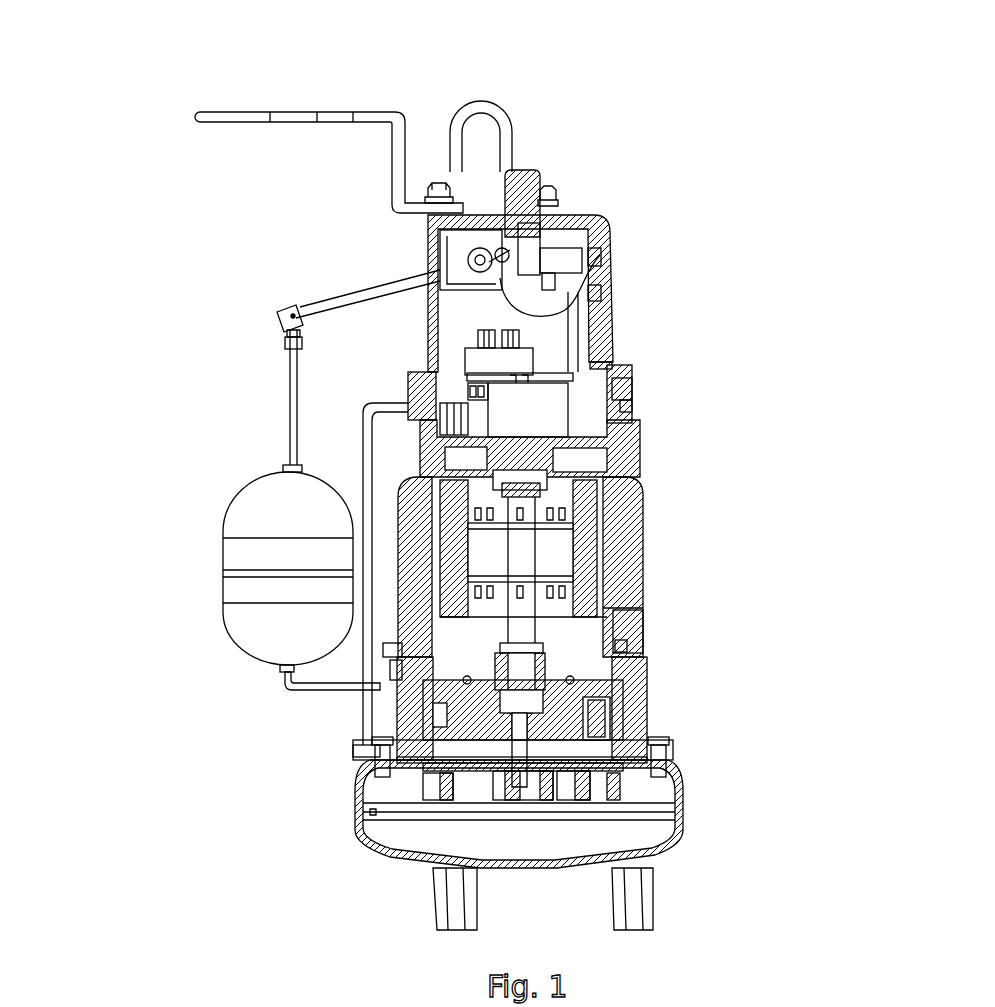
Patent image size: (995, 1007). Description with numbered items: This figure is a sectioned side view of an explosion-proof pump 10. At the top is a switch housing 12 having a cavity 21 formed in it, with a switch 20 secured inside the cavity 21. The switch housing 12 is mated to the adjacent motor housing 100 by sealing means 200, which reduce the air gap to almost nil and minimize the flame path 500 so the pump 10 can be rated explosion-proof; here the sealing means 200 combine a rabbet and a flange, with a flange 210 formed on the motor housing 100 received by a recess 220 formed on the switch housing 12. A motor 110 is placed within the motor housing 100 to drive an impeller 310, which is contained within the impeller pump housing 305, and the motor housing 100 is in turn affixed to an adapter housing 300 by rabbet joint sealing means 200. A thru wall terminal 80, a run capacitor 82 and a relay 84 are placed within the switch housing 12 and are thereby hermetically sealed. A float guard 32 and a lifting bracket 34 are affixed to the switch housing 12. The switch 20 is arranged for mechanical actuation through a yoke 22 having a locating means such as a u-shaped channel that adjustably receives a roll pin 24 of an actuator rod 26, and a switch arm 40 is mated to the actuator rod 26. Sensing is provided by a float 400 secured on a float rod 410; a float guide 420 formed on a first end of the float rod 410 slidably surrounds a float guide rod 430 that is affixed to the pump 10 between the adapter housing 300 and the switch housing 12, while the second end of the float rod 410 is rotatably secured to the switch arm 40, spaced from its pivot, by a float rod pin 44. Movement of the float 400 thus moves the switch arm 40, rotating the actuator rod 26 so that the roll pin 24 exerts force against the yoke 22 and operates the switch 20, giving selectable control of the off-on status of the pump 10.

The pump 10 is at (276, 204).
The switch housing 12 is at (590, 217).
The switch 20 is at (553, 293).
The cavity 21 is at (600, 257).
The yoke 22 is at (600, 293).
The roll pin 24 is at (432, 192).
The actuator rod 26 is at (470, 262).
The float guard 32 is at (293, 112).
The lifting bracket 34 is at (507, 105).
The switch arm 40 is at (340, 278).
The float rod pin 44 is at (297, 317).
The thru wall terminal 80 is at (637, 457).
The run capacitor 82 is at (465, 352).
The relay 84 is at (603, 373).
The motor housing 100 is at (642, 540).
The motor 110 is at (632, 500).
The sealing means 200 is at (613, 367).
The flange 210 is at (630, 378).
The recess 220 is at (628, 405).
The adapter housing 300 is at (668, 852).
The impeller pump housing 305 is at (643, 700).
The impeller 310 is at (620, 798).
The float 400 is at (243, 493).
The float rod 410 is at (290, 402).
The float guide 420 is at (303, 693).
The float guide rod 430 is at (363, 710).
The flame path 500 is at (423, 372).